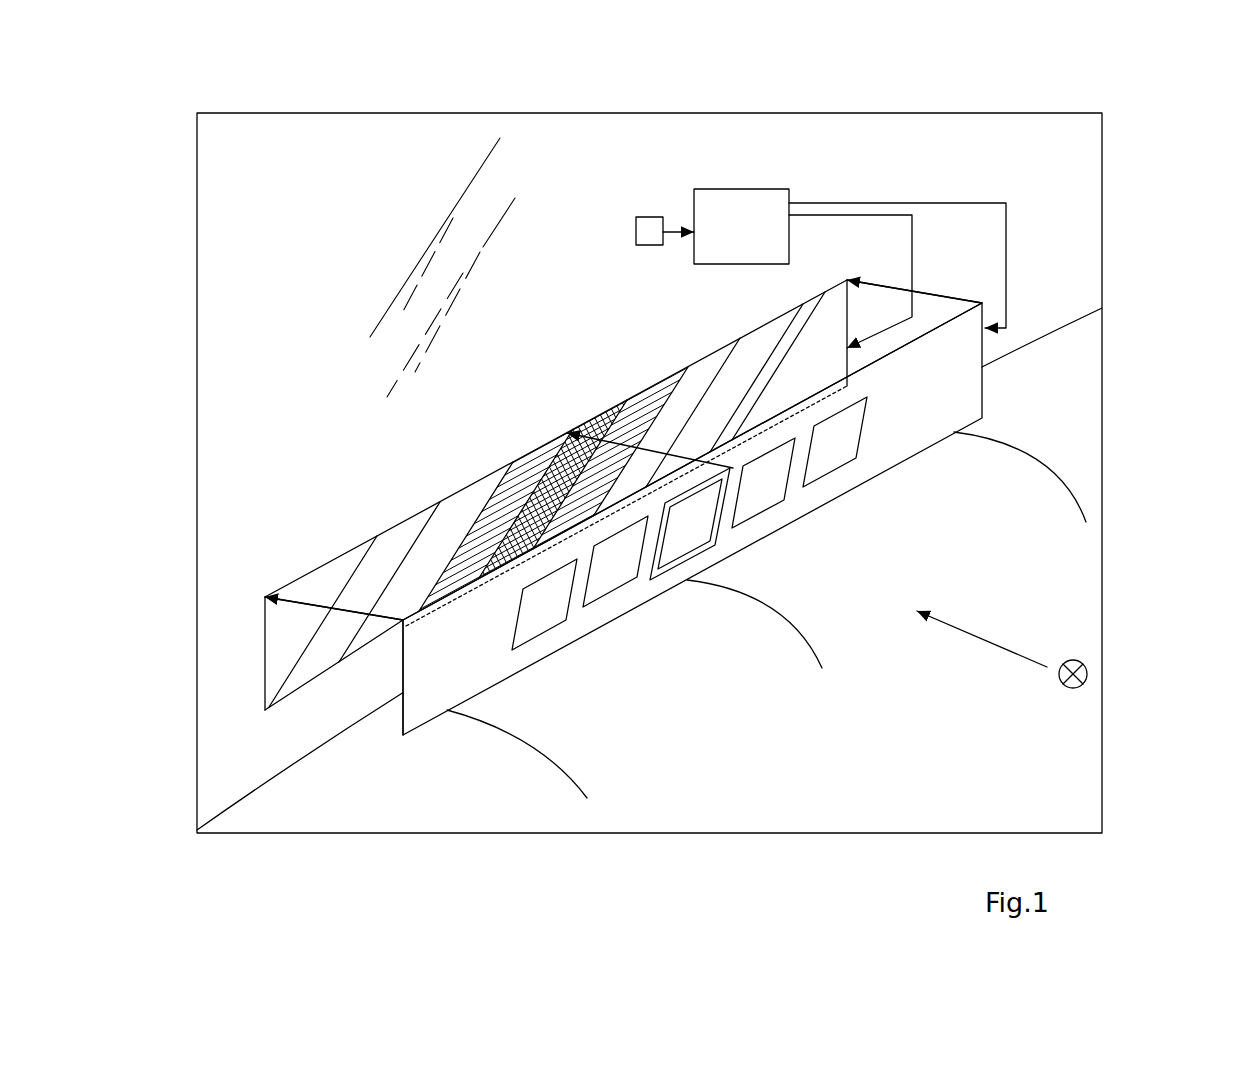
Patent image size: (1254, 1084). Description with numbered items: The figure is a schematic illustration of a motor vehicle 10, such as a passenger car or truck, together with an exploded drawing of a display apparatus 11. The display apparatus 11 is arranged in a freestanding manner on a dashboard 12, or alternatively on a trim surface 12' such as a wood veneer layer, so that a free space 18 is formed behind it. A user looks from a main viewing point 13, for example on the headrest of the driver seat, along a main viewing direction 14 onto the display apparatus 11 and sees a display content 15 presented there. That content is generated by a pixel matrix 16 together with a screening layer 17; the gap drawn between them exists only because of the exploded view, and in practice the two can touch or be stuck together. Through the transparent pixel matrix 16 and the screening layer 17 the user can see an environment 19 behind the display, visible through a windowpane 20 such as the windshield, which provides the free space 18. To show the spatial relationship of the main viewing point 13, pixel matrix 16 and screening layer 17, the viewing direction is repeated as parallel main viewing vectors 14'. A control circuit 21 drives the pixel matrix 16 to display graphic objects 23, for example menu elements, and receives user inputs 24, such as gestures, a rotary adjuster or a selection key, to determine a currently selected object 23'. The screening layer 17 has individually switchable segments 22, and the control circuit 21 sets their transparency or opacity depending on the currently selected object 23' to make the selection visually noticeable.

The motor vehicle 10 is at (1102, 401).
The display apparatus 11 is at (375, 463).
The dashboard 12 is at (703, 569).
The trim surface 12' is at (1020, 477).
The main viewing point 13 is at (1059, 680).
The main viewing direction 14 is at (982, 628).
The main viewing vectors 14' is at (626, 468).
The display content 15 is at (780, 663).
The pixel matrix 16 is at (925, 449).
The screening layer 17 is at (675, 430).
The free space 18 is at (487, 265).
The environment 19 is at (423, 305).
The windowpane 20 is at (240, 346).
The control circuit 21 is at (740, 189).
The switchable segments 22 is at (345, 552).
The graphic objects 23 is at (708, 575).
The currently selected object 23' is at (690, 567).
The user inputs 24 is at (649, 217).